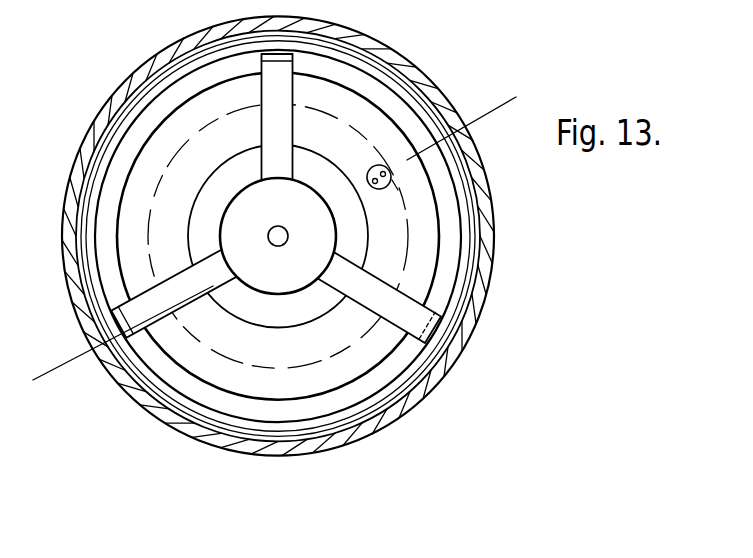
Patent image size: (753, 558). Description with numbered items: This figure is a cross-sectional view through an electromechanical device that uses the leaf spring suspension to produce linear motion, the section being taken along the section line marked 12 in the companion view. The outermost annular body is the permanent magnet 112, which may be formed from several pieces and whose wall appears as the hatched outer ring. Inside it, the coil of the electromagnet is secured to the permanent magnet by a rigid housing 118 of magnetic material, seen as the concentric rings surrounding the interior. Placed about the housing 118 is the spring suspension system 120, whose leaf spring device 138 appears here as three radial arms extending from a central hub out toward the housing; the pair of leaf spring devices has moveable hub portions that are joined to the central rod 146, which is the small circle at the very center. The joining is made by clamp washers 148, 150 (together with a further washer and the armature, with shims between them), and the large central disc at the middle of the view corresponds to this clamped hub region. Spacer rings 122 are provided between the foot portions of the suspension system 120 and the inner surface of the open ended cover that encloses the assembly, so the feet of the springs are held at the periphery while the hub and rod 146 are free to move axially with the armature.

The section line 12- 12 is at (515, 160).
The permanent magnet 112 is at (267, 370).
The rigid housing 118 is at (312, 380).
The spring suspension system 120 is at (416, 311).
The spacer rings 122 is at (278, 259).
The leaf spring device 138 is at (157, 322).
The rod 146 is at (285, 245).
The clamp washer 148 is at (287, 214).
The clamp washer 150 is at (325, 303).